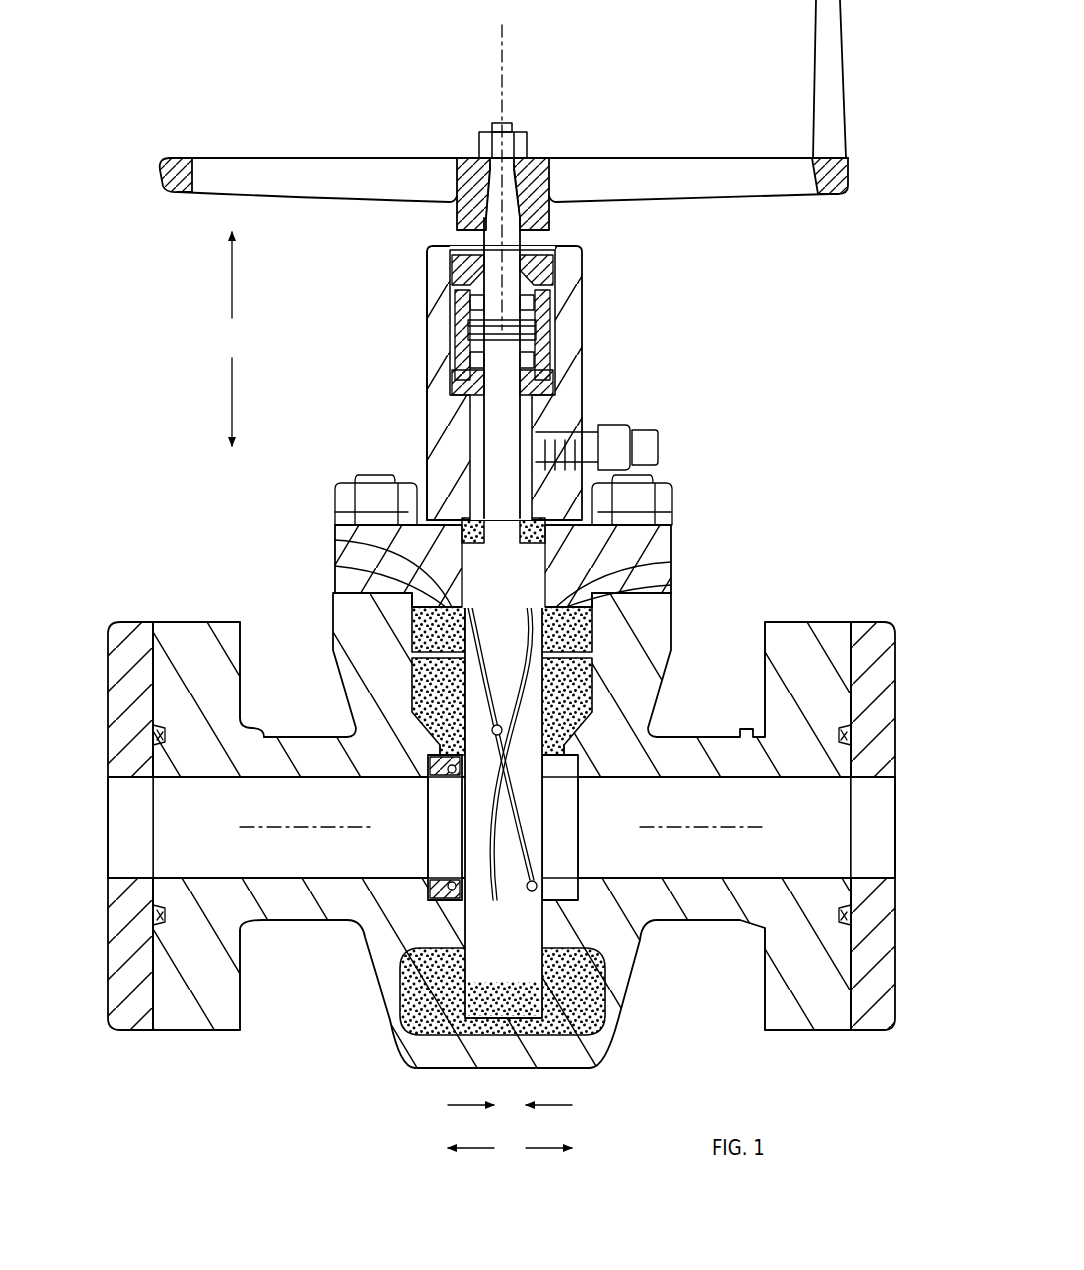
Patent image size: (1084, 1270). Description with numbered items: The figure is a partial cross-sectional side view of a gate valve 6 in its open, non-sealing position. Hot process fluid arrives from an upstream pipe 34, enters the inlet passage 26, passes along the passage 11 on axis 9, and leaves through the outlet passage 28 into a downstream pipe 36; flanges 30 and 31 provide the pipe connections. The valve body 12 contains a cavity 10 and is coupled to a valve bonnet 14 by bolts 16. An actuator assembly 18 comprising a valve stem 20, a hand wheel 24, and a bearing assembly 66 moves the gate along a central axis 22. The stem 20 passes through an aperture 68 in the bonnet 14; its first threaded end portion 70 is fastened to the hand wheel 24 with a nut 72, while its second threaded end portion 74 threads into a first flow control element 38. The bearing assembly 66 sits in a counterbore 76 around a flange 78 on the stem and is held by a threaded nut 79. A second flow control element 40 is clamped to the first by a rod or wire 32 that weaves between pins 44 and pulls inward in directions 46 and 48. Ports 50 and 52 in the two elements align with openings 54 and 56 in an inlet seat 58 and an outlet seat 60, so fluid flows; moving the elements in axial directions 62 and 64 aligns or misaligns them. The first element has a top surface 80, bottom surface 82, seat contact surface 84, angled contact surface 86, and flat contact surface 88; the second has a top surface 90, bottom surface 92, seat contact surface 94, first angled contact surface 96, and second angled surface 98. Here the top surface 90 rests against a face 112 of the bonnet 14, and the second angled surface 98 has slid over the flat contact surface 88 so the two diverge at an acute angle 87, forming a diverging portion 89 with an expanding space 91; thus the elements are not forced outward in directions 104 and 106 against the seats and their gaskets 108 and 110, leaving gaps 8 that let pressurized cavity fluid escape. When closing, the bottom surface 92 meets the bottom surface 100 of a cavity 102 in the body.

The gate valve 6 is at (828, 314).
The gaps 8 is at (430, 780).
The axis 9 is at (300, 830).
The cavity 10 is at (620, 572).
The passage 11 is at (300, 852).
The valve body 12 is at (310, 962).
The valve bonnet 14 is at (612, 284).
The bolts 16 is at (348, 488).
The actuator assembly 18 is at (504, 115).
The valve stem 20 is at (498, 448).
The central axis 22 is at (508, 66).
The hand wheel 24 is at (722, 162).
The inlet passage 26 is at (207, 841).
The outlet passage 28 is at (827, 841).
The flange 30 is at (198, 1032).
The flange 31 is at (790, 1032).
The rod or wire 32 is at (540, 850).
The upstream pipe 34 is at (118, 636).
The downstream pipe 36 is at (880, 634).
The first flow control element 38 is at (602, 640).
The second flow control element 40 is at (428, 706).
The pins 44 is at (522, 598).
The direction 46 is at (465, 1105).
The direction 48 is at (553, 1105).
The port 50 is at (440, 810).
The port 52 is at (562, 810).
The opening 54 is at (440, 836).
The opening 56 is at (572, 840).
The inlet seat 58 is at (432, 758).
The outlet seat 60 is at (592, 757).
The axial direction 62 is at (232, 398).
The axial direction 64 is at (232, 284).
The bearing assembly 66 is at (418, 286).
The aperture 68 is at (540, 396).
The first threaded end portion 70 is at (492, 127).
The nut 72 is at (524, 146).
The second threaded end portion 74 is at (478, 516).
The counterbore 76 is at (465, 333).
The flange 78 is at (552, 333).
The threaded nut 79 is at (548, 272).
The top surface 80 is at (600, 512).
The bottom surface 82 is at (540, 907).
The seat contact surface 84 is at (566, 722).
The angled contact surface 86 is at (476, 665).
The acute angle 87 is at (548, 792).
The flat contact surface 88 is at (500, 900).
The diverging portion 89 is at (546, 856).
The top surface 90 is at (380, 540).
The expanding space 91 is at (456, 886).
The bottom surface 92 is at (447, 930).
The seat contact surface 94 is at (420, 678).
The first angled contact surface 96 is at (445, 636).
The second angled surface 98 is at (492, 845).
The bottom surface 100 is at (430, 1068).
The cavity 102 is at (420, 1000).
The direction 104 is at (480, 1148).
The direction 106 is at (540, 1148).
The gasket 108 is at (470, 403).
The gasket 110 is at (562, 892).
The face 112 is at (340, 567).